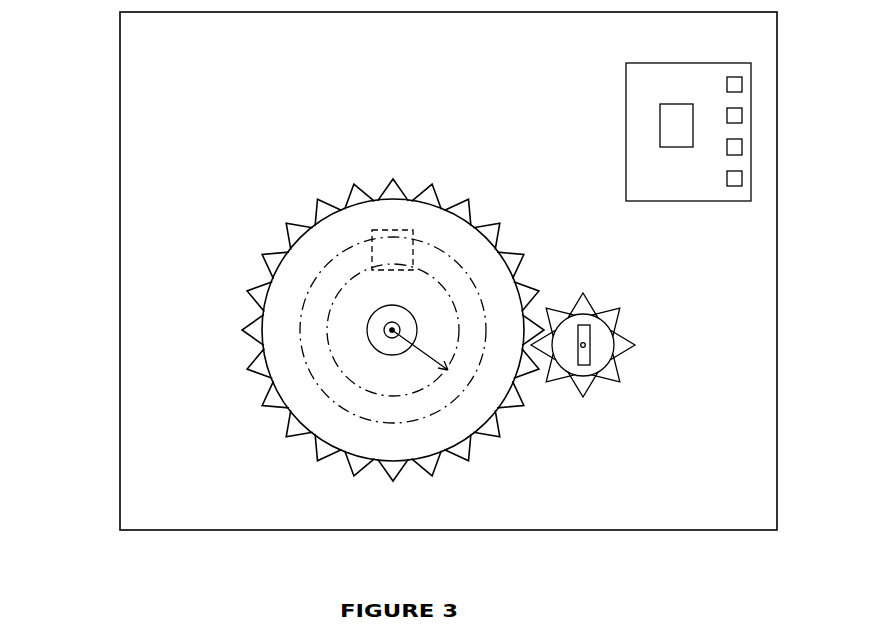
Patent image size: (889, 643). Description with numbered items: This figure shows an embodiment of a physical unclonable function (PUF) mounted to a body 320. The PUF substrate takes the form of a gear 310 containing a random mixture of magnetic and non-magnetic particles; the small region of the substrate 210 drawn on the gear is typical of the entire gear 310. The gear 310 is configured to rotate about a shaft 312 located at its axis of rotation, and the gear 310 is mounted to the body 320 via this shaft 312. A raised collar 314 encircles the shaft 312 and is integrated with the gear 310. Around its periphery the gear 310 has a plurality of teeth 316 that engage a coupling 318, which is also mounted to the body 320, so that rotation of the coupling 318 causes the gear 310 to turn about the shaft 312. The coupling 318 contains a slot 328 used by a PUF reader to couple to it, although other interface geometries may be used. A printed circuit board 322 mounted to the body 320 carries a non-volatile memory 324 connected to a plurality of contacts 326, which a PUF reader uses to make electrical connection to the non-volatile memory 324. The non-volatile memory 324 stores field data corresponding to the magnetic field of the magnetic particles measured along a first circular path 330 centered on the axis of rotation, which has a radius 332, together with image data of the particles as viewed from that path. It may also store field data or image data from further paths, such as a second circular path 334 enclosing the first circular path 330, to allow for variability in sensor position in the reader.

The body 320 is at (122, 110).
The gear 310 is at (288, 243).
The teeth 316 is at (435, 202).
The shaft 312 is at (390, 327).
The raised collar 314 is at (400, 306).
The substrate 210 is at (378, 229).
The second circular path 334 is at (300, 333).
The first circular path 330 is at (343, 372).
The radius 332 is at (420, 352).
The coupling 318 is at (598, 313).
The slot 328 is at (590, 377).
The printed circuit board 322 is at (626, 68).
The non-volatile memory 324 is at (660, 128).
The contacts 326 is at (734, 76).